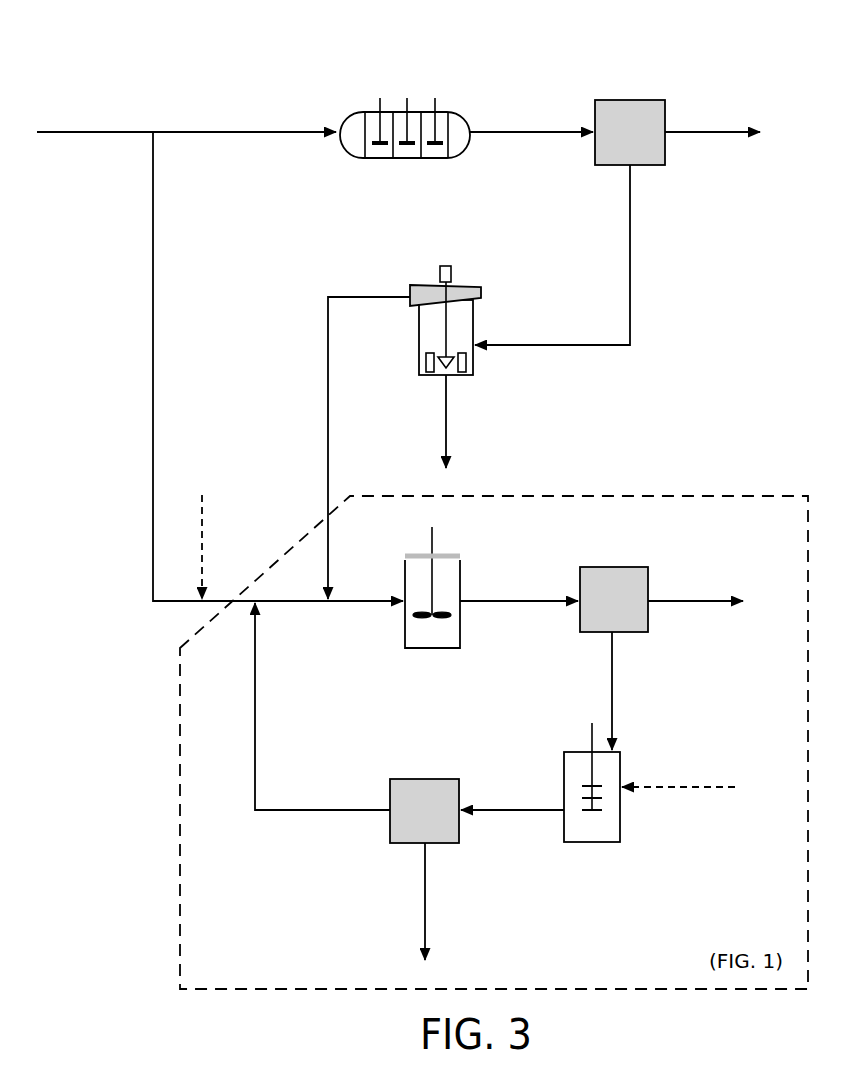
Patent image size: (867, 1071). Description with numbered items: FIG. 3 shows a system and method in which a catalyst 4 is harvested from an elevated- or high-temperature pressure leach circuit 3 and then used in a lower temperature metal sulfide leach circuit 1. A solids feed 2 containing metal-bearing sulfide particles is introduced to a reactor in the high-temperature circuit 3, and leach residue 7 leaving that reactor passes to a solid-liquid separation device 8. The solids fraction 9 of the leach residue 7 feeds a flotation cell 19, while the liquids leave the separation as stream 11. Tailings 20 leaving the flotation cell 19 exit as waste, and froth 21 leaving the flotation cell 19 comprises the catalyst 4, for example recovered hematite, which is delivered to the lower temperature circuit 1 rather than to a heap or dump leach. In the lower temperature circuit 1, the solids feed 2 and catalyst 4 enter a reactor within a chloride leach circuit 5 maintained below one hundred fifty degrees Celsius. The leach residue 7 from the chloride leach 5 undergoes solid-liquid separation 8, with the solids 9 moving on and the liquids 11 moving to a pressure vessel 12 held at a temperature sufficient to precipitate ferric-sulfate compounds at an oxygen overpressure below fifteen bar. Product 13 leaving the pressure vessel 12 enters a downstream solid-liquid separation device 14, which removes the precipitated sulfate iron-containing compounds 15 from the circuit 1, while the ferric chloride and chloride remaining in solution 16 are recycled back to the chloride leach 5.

The low- to moderate-temperature metal sulfide leach circuit 1 is at (103, 438).
The solids feed 2 is at (94, 132).
The high-temperature pressure leach circuit 3 is at (390, 61).
The catalyst 4 is at (328, 456).
The chloride leach circuit 5 is at (388, 176).
The leach residue 7 is at (528, 132).
The solid-liquid separation device 8 is at (630, 100).
The solids fraction 9 is at (630, 232).
The liquids fraction 11 is at (713, 132).
The pressure vessel 12 is at (620, 818).
The product 13 is at (520, 810).
The downstream solid-liquid separation device 14 is at (390, 792).
The precipitated sulfate iron-containing compounds 15 is at (425, 888).
The remaining solution 16 is at (255, 740).
The flotation cell 19 is at (477, 316).
The tailings 20 is at (446, 412).
The froth 21 is at (343, 287).